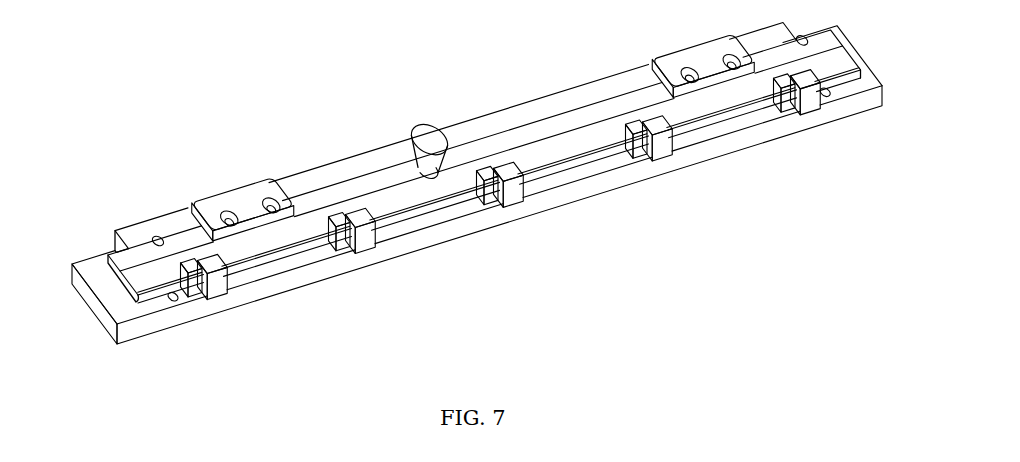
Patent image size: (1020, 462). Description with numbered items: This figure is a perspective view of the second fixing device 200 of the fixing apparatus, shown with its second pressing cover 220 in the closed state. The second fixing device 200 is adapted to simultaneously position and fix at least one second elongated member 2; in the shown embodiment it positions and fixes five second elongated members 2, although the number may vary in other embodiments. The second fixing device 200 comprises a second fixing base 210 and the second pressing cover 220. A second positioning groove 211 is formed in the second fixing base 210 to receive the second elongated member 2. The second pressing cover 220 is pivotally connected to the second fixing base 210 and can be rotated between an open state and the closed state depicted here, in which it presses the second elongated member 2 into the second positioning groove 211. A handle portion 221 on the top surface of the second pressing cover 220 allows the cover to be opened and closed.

The second fixing device 200 is at (267, 134).
The second fixing base 210 is at (100, 272).
The second positioning groove 211 is at (508, 177).
The second pressing cover 220 is at (570, 148).
The handle portion 221 is at (418, 138).
The second elongated member 2 is at (526, 200).